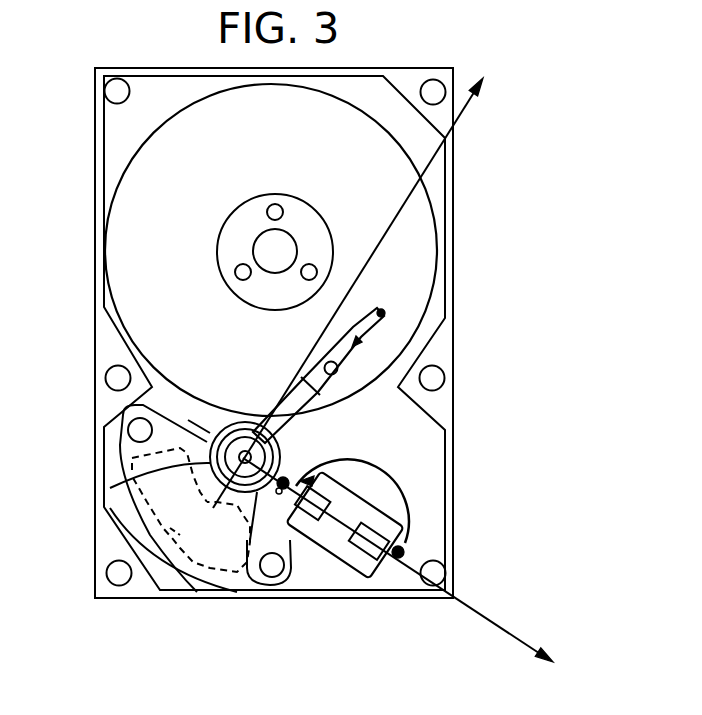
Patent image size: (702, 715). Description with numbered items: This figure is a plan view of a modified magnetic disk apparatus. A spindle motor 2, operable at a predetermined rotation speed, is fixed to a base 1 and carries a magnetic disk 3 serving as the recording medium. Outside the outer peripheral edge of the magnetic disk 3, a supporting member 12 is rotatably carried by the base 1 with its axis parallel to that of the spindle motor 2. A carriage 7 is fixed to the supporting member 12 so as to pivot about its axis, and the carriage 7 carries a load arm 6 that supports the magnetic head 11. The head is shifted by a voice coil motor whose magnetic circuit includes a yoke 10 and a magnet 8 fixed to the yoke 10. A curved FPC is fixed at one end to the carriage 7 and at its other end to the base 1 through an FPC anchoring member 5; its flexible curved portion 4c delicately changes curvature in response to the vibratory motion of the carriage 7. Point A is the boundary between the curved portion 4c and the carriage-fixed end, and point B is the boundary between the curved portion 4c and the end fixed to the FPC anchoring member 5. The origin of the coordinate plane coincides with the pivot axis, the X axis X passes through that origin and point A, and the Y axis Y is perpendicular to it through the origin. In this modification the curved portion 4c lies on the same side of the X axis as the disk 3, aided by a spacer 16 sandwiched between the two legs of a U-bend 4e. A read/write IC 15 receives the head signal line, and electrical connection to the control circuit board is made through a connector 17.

The base 1 is at (440, 351).
The spindle motor 2 is at (262, 249).
The magnetic disk 3 is at (127, 192).
The curved portion of the FPC 4c is at (408, 498).
The U-bend 4e is at (243, 512).
The FPC anchoring member 5 is at (387, 553).
The load arm 6 is at (362, 342).
The carriage 7 is at (281, 408).
The magnet 8 is at (178, 580).
The yoke 10 is at (247, 572).
The magnetic head 11 is at (386, 318).
The supporting member 12 is at (132, 462).
The read/write IC 15 is at (368, 540).
The spacer 16 is at (287, 473).
The connector 17 is at (297, 547).
The carriage-fixing point A is at (300, 481).
The base-side fixing point B is at (427, 553).
The X axis X is at (412, 565).
The Y axis Y is at (362, 289).